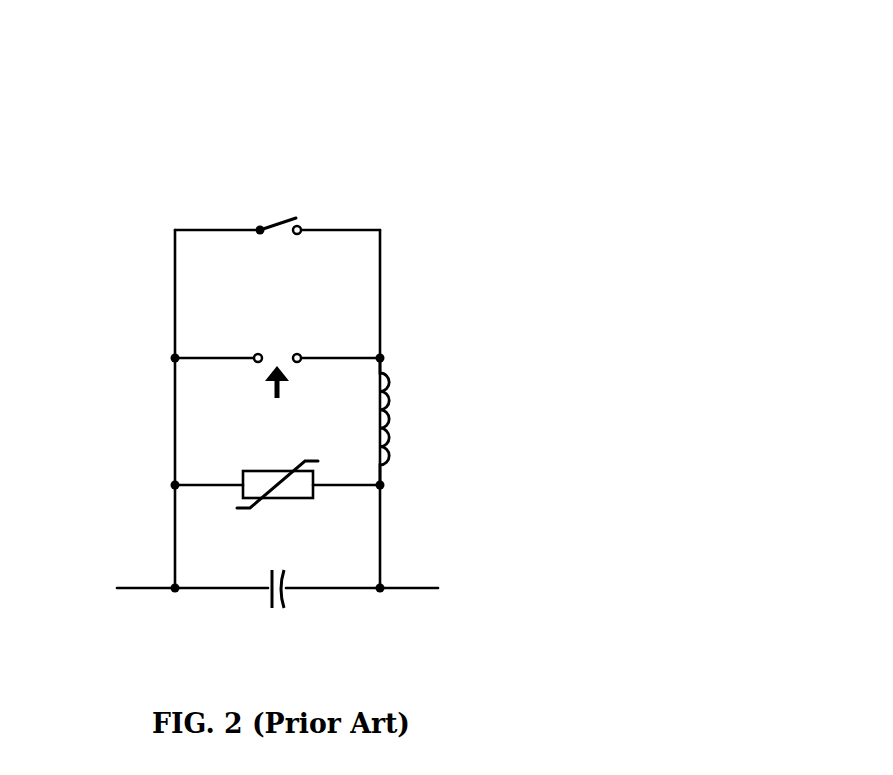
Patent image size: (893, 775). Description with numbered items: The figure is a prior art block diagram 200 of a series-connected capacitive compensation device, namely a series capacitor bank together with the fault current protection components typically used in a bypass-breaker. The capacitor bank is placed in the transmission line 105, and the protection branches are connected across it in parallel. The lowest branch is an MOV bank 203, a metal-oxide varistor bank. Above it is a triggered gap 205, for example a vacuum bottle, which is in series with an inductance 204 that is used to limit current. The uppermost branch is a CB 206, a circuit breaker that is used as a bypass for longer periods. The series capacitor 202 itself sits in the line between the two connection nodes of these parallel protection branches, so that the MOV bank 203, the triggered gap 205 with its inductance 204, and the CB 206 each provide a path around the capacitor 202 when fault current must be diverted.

The prior art block diagram 200 is at (309, 371).
The CB 206 is at (277, 248).
The triggered gap 205 is at (262, 380).
The inductance 204 is at (408, 417).
The MOV bank 203 is at (295, 510).
The series capacitor 202 is at (276, 622).
The transmission line 105 is at (141, 592).